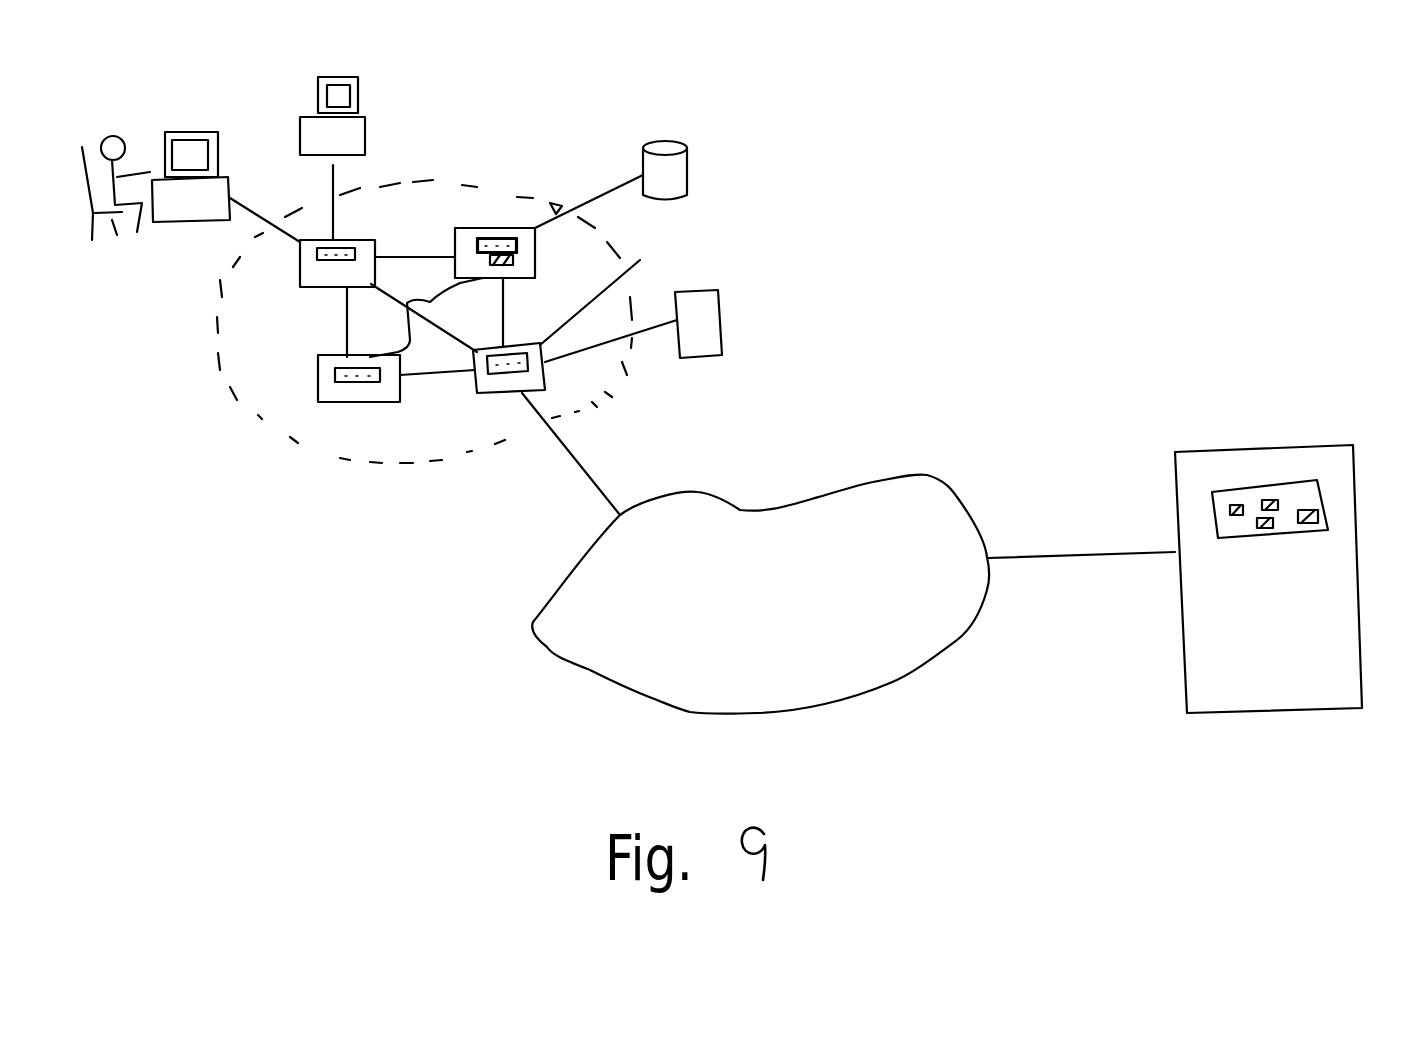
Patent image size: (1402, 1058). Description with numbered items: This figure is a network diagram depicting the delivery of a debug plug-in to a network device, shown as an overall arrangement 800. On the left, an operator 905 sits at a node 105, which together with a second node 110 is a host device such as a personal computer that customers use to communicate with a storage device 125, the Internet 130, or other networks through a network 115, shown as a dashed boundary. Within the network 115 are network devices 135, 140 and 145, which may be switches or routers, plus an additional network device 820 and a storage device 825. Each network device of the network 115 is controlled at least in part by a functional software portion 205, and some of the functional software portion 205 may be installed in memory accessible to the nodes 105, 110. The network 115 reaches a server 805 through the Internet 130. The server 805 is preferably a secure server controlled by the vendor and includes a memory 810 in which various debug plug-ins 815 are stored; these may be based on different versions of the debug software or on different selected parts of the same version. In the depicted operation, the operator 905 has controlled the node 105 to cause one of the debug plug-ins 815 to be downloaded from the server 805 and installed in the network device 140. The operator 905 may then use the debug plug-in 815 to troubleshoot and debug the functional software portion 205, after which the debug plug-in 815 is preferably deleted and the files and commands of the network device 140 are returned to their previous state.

The operator 905 is at (115, 132).
The node 105 is at (153, 223).
The node 110 is at (362, 112).
The network device 135 is at (376, 240).
The network device 140 is at (470, 233).
The network device 145 is at (490, 397).
The network device 820 is at (318, 402).
The storage device 825 is at (685, 162).
The functional software portion 205 is at (520, 247).
The debug plug-in 815 is at (508, 267).
The storage device 125 is at (718, 292).
The network 115 is at (317, 452).
The Internet 130 is at (533, 622).
The monitoring system 800 is at (992, 282).
The server 805 is at (1186, 659).
The memory 810 is at (1234, 493).